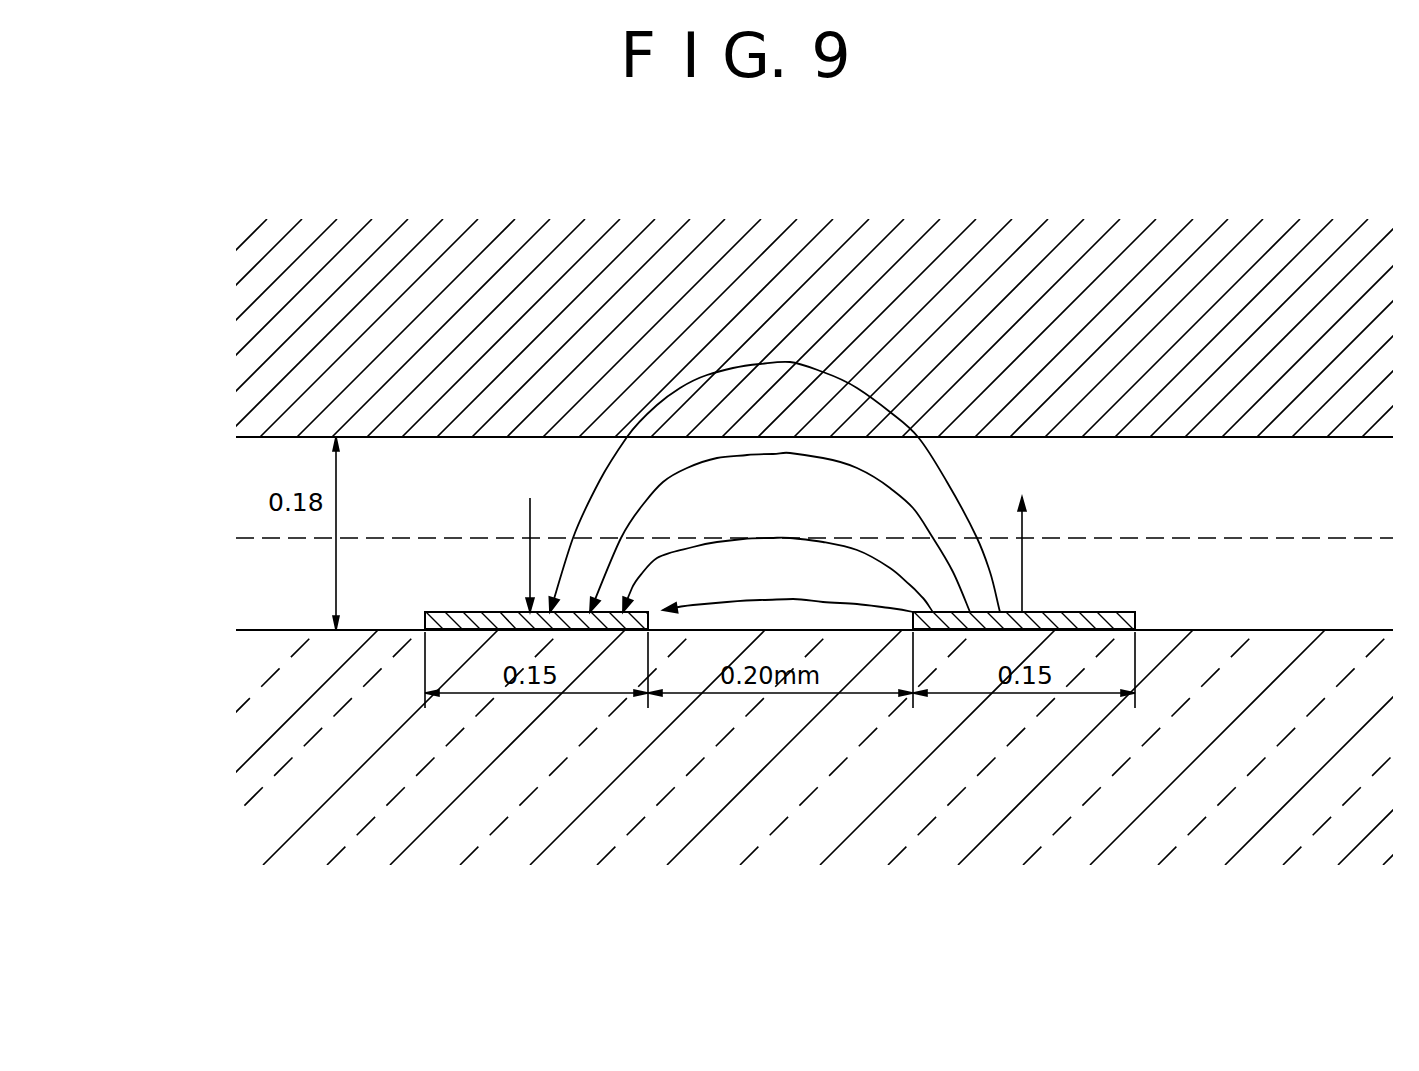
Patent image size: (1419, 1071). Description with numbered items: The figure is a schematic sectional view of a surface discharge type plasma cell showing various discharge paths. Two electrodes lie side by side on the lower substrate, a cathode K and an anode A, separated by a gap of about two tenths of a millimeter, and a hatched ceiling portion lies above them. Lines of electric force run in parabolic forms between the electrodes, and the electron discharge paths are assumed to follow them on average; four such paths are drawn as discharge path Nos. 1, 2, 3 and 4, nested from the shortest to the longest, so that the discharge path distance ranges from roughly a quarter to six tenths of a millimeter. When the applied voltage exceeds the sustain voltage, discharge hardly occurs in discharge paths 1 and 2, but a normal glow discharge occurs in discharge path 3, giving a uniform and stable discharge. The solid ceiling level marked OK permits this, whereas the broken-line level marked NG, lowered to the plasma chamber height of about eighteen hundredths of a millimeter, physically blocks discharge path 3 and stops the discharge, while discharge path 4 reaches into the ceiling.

The discharge path No. 1 is at (788, 588).
The discharge path No. 2 is at (778, 575).
The discharge path No. 3 is at (780, 532).
The discharge path No. 4 is at (774, 487).
The cathode electrode K is at (450, 612).
The anode electrode A is at (1125, 610).
The acceptable gap level OK is at (232, 437).
The unacceptable gap level NG is at (232, 538).